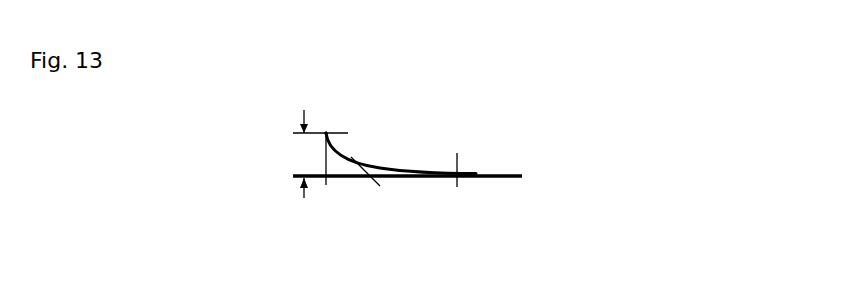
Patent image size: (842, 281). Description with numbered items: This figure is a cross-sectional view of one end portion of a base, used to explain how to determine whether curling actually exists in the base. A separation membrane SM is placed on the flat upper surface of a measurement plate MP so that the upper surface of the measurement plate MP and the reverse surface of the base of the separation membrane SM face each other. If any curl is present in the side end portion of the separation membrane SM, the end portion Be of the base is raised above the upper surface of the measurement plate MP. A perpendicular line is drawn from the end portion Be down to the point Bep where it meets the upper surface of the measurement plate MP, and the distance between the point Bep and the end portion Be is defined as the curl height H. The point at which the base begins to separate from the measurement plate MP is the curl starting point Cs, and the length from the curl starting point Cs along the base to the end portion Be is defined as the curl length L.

The end portion of the base Be is at (326, 133).
The separation membrane SM is at (381, 163).
The curl height H is at (320, 154).
The point where perpendicular line meets measurement plate Bep is at (327, 178).
The curl length L is at (380, 186).
The measurement plate MP is at (425, 173).
The curl starting point Cs is at (407, 199).